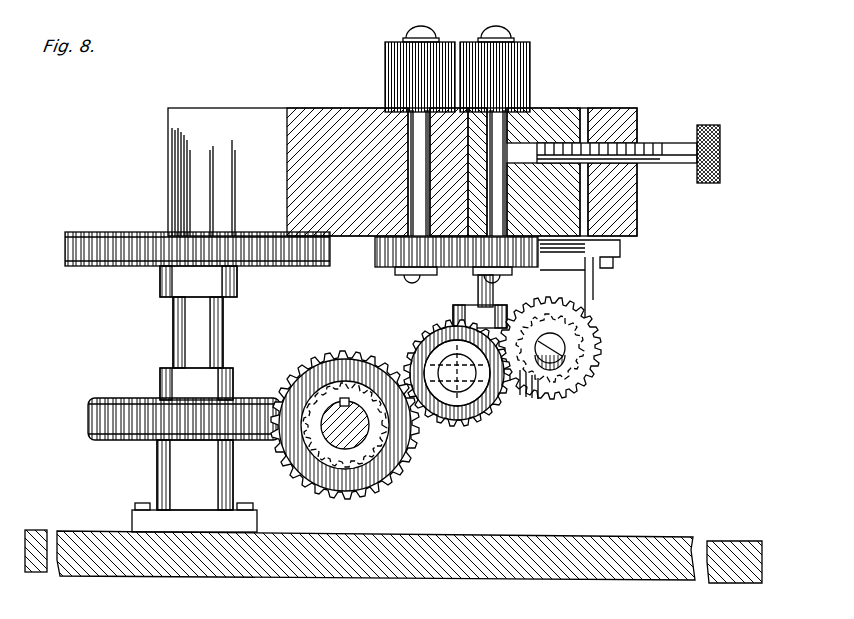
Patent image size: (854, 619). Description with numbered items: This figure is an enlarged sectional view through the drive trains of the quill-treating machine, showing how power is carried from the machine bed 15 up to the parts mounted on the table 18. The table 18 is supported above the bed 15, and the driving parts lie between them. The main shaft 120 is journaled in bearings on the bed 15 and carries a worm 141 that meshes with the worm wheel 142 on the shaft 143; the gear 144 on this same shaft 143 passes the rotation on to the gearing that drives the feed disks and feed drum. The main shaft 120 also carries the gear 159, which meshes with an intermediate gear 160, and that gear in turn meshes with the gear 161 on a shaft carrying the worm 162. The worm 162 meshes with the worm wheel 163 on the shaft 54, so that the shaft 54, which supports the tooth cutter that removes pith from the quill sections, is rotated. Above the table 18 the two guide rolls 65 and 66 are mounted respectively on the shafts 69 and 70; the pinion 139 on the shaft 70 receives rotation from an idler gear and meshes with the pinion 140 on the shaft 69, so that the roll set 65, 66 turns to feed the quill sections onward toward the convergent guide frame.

The machine bed 15 is at (664, 540).
The table 18 is at (318, 108).
The shaft 54 is at (470, 294).
The guide roll 65 is at (525, 62).
The guide roll 66 is at (446, 42).
The shaft 69 is at (510, 140).
The shaft 70 is at (415, 156).
The main shaft 120 is at (352, 430).
The pinion 139 is at (388, 267).
The pinion 140 is at (579, 254).
The worm 141 is at (300, 358).
The worm wheel 142 is at (248, 398).
The shaft 143 is at (182, 399).
The gear 144 is at (95, 266).
The gear 159 is at (280, 452).
The intermediate gear 160 is at (450, 426).
The gear 161 is at (496, 398).
The worm 162 is at (593, 290).
The worm wheel 163 is at (440, 334).